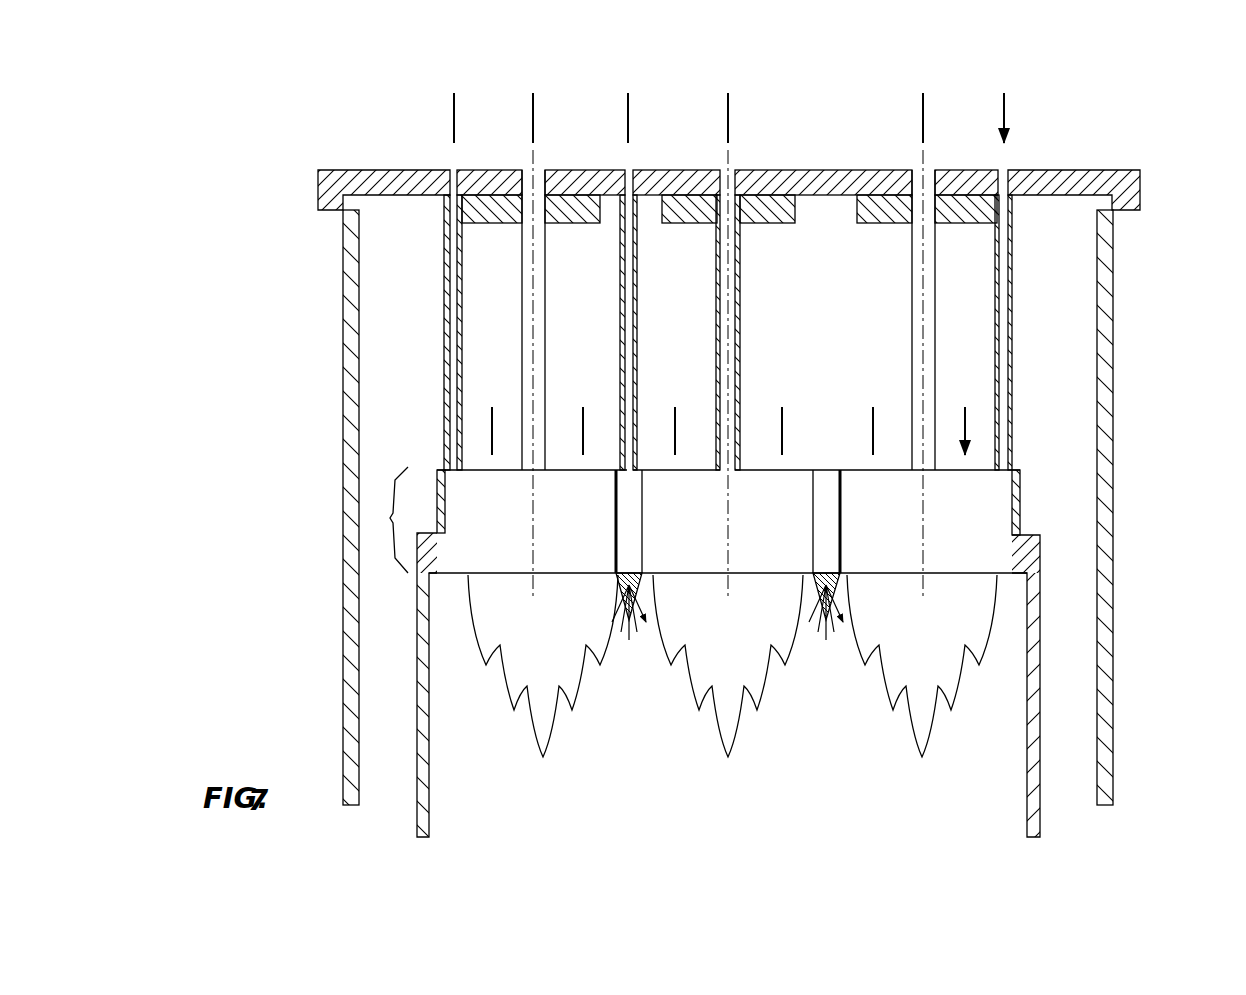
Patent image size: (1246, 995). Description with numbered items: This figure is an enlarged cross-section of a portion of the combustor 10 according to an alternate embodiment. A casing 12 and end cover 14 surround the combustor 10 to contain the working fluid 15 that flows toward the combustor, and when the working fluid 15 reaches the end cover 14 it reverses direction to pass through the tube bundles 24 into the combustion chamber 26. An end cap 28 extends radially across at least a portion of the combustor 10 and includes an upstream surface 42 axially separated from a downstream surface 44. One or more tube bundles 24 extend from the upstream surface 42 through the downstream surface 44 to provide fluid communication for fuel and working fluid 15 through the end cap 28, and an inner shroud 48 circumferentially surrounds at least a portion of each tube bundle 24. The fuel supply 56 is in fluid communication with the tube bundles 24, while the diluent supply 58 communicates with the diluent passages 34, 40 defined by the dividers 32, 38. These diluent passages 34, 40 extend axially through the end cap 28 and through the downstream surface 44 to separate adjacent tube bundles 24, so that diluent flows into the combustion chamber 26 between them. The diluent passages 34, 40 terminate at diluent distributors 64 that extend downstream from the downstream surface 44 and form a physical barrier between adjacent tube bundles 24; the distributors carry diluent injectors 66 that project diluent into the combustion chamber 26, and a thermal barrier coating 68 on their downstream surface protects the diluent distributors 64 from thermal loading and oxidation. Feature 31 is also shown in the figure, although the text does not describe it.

The combustor 10 is at (1172, 175).
The casing 12 is at (343, 300).
The end cover 14 is at (407, 170).
The working fluid 15 is at (783, 425).
The tube bundle 24 is at (797, 460).
The combustion chamber 26 is at (814, 681).
The end cap 28 is at (390, 518).
The divider wall 31 is at (615, 525).
The divider 32 is at (808, 552).
The diluent passage 34 is at (823, 538).
The divider 38 is at (1013, 554).
The diluent passage 40 is at (1012, 503).
The upstream surface 42 is at (482, 468).
The downstream surface 44 is at (482, 574).
The inner shroud 48 is at (640, 485).
The fuel supply 56 is at (740, 250).
The diluent supply 58 is at (620, 273).
The diluent distributor 64 is at (647, 588).
The diluent injector 66 is at (613, 607).
The thermal barrier coating 68 is at (616, 583).